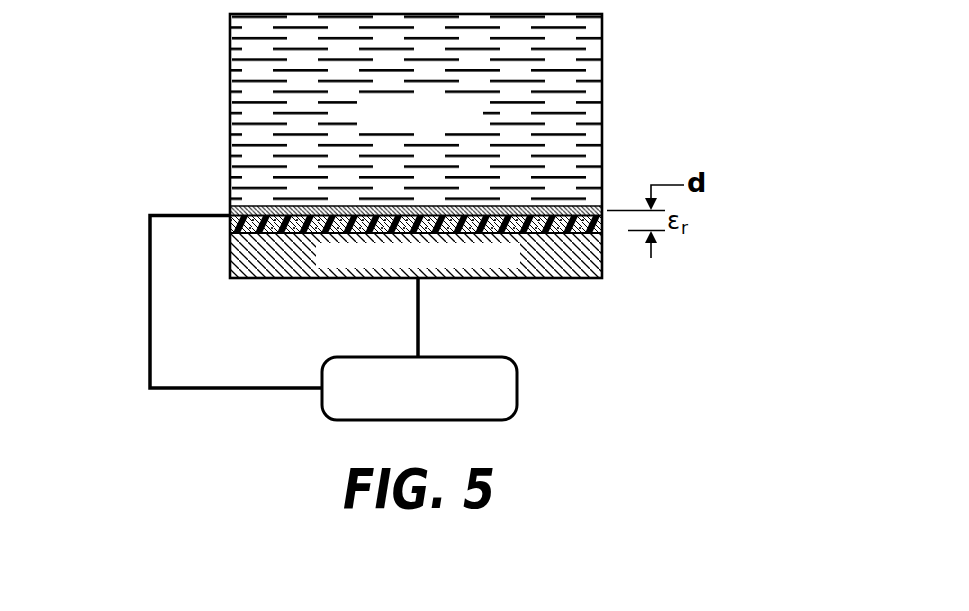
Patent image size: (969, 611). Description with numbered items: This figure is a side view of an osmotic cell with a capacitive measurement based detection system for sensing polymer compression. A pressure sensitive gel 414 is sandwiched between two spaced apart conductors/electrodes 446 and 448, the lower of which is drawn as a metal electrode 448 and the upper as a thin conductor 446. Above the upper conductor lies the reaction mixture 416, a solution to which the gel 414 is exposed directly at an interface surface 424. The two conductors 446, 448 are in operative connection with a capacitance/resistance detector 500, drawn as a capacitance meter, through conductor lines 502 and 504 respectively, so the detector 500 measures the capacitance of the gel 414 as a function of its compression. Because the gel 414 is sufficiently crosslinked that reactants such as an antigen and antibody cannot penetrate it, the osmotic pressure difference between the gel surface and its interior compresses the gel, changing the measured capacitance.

The reaction mixture 416 is at (592, 97).
The interface surface 424 is at (228, 197).
The conductor/electrode 446 is at (585, 201).
The pressure sensitive gel 414 is at (603, 224).
The conductor/electrode 448 is at (295, 278).
The conductor line 502 is at (147, 307).
The conductor line 504 is at (420, 325).
The capacitance/resistance detector 500 is at (517, 380).